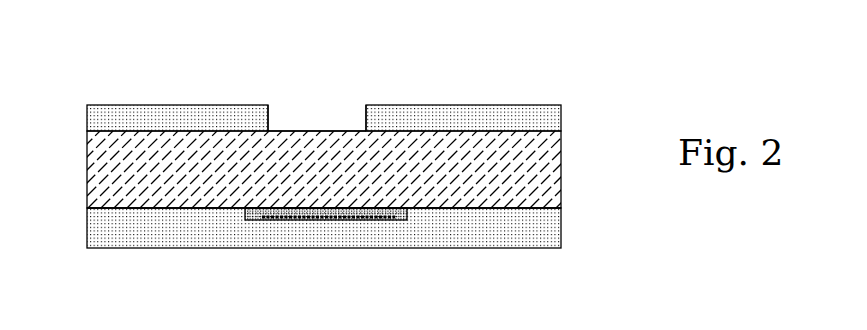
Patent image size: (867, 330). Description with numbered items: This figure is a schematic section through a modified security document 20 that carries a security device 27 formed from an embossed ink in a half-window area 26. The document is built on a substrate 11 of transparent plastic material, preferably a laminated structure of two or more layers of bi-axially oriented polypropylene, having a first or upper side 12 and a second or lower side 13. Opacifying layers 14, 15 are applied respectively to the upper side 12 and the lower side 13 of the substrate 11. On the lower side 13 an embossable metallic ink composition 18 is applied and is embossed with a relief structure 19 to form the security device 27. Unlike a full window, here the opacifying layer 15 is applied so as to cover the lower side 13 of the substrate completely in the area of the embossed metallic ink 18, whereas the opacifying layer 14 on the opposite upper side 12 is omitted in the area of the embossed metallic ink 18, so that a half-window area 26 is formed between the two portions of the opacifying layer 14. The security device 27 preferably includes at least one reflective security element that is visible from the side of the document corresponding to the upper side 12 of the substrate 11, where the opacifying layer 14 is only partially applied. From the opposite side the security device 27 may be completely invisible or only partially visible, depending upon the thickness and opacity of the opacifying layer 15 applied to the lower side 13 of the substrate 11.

The substrate 11 is at (561, 166).
The first or upper side 12 is at (478, 131).
The second or lower side 13 is at (488, 208).
The opacifying layer 14 is at (205, 118).
The opacifying layer 15 is at (160, 229).
The embossable ink composition 18 is at (253, 220).
The relief structure 19 is at (307, 220).
The modified security document 20 is at (600, 108).
The half-window area 26 is at (313, 106).
The security device 27 is at (343, 232).